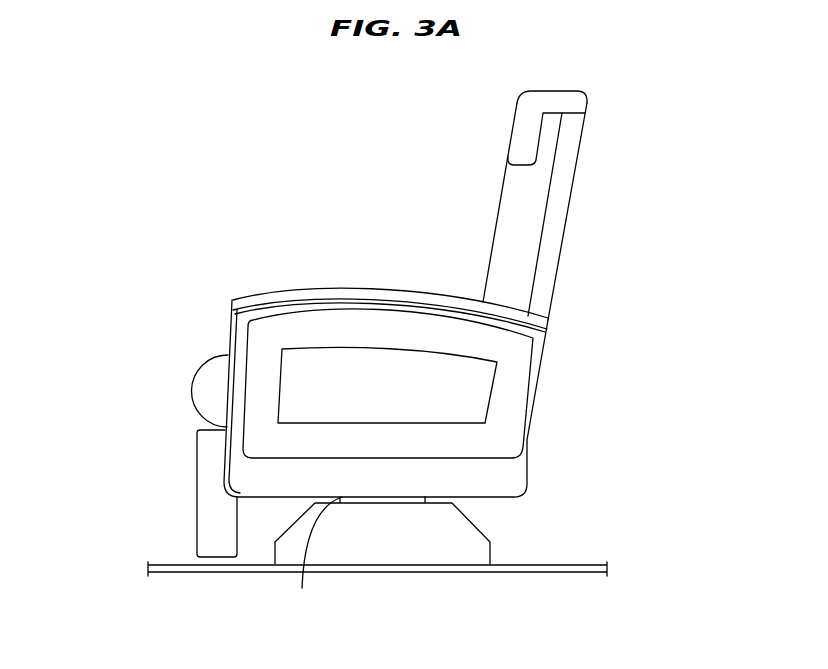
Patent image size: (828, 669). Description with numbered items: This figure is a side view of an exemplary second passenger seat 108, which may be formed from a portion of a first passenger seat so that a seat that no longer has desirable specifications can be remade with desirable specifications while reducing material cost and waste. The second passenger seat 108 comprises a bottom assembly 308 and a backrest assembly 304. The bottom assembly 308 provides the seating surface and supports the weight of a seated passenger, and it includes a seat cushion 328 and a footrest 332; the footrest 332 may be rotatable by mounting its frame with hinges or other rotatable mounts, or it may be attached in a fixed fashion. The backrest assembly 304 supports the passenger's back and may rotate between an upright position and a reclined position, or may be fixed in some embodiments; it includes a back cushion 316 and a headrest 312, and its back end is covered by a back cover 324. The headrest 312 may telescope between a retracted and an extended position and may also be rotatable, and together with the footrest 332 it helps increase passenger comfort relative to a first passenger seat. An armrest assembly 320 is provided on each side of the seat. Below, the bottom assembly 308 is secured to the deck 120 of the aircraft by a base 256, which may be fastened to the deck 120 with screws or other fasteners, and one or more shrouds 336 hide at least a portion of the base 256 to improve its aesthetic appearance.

The second passenger seat 108 is at (367, 170).
The deck 120 is at (558, 563).
The base 256 is at (312, 557).
The backrest assembly 304 is at (575, 233).
The bottom assembly 308 is at (550, 407).
The headrest 312 is at (543, 90).
The back cushion 316 is at (490, 242).
The armrest assembly 320 is at (367, 290).
The back cover 324 is at (577, 173).
The seat cushion 328 is at (205, 363).
The footrest 332 is at (195, 508).
The shroud 336 is at (483, 535).